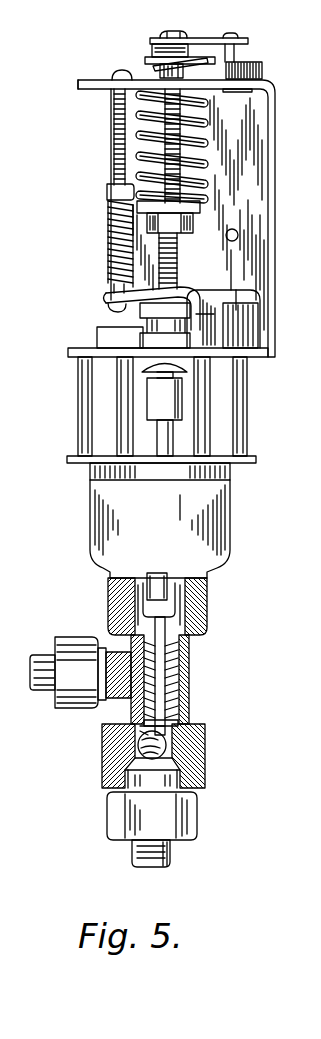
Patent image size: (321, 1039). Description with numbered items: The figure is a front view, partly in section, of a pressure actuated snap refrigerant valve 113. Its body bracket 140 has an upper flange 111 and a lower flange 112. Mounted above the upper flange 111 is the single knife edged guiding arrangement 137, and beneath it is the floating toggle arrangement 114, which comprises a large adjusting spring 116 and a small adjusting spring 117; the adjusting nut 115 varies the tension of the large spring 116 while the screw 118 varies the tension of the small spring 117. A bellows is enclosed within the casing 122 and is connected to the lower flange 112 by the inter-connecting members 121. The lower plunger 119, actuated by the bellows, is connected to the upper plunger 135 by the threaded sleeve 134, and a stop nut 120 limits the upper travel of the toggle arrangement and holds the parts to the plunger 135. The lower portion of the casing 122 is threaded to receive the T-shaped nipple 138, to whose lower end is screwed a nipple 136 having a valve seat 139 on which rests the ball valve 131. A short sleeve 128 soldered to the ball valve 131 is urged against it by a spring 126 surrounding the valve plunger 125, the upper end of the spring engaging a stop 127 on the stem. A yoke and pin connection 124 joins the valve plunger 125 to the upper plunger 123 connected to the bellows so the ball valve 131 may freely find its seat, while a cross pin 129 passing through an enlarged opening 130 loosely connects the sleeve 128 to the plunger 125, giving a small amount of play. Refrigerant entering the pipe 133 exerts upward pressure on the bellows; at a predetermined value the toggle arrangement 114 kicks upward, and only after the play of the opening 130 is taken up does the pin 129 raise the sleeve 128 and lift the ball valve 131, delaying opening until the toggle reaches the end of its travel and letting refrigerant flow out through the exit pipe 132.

The upper flange 111 is at (226, 88).
The lower flange 112 is at (262, 351).
The pressure actuated snap refrigerant valve 113 is at (320, 191).
The floating toggle arrangement 114 is at (243, 276).
The adjusting nut 115 is at (197, 220).
The large adjusting spring 116 is at (205, 133).
The small adjusting spring 117 is at (106, 238).
The screw 118 is at (122, 70).
The lower plunger 119 is at (170, 437).
The stop nut 120 is at (246, 365).
The inter-connecting members 121 is at (79, 379).
The casing 122 is at (231, 501).
The upper plunger 123 is at (157, 589).
The yoke and pin connection 124 is at (172, 606).
The valve plunger 125 is at (172, 671).
The spring 126 is at (175, 689).
The stop 127 is at (185, 637).
The sleeve 128 is at (168, 731).
The cross pin 129 is at (165, 711).
The enlarged opening 130 is at (140, 711).
The ball valve 131 is at (160, 744).
The exit pipe 132 is at (172, 856).
The pipe 133 is at (33, 669).
The threaded sleeve 134 is at (150, 404).
The upper plunger 135 is at (178, 252).
The nipple 136 is at (202, 771).
The single knife edged guiding arrangement 137 is at (258, 19).
The T-shaped nipple 138 is at (190, 655).
The valve seat 139 is at (168, 759).
The body bracket 140 is at (271, 142).